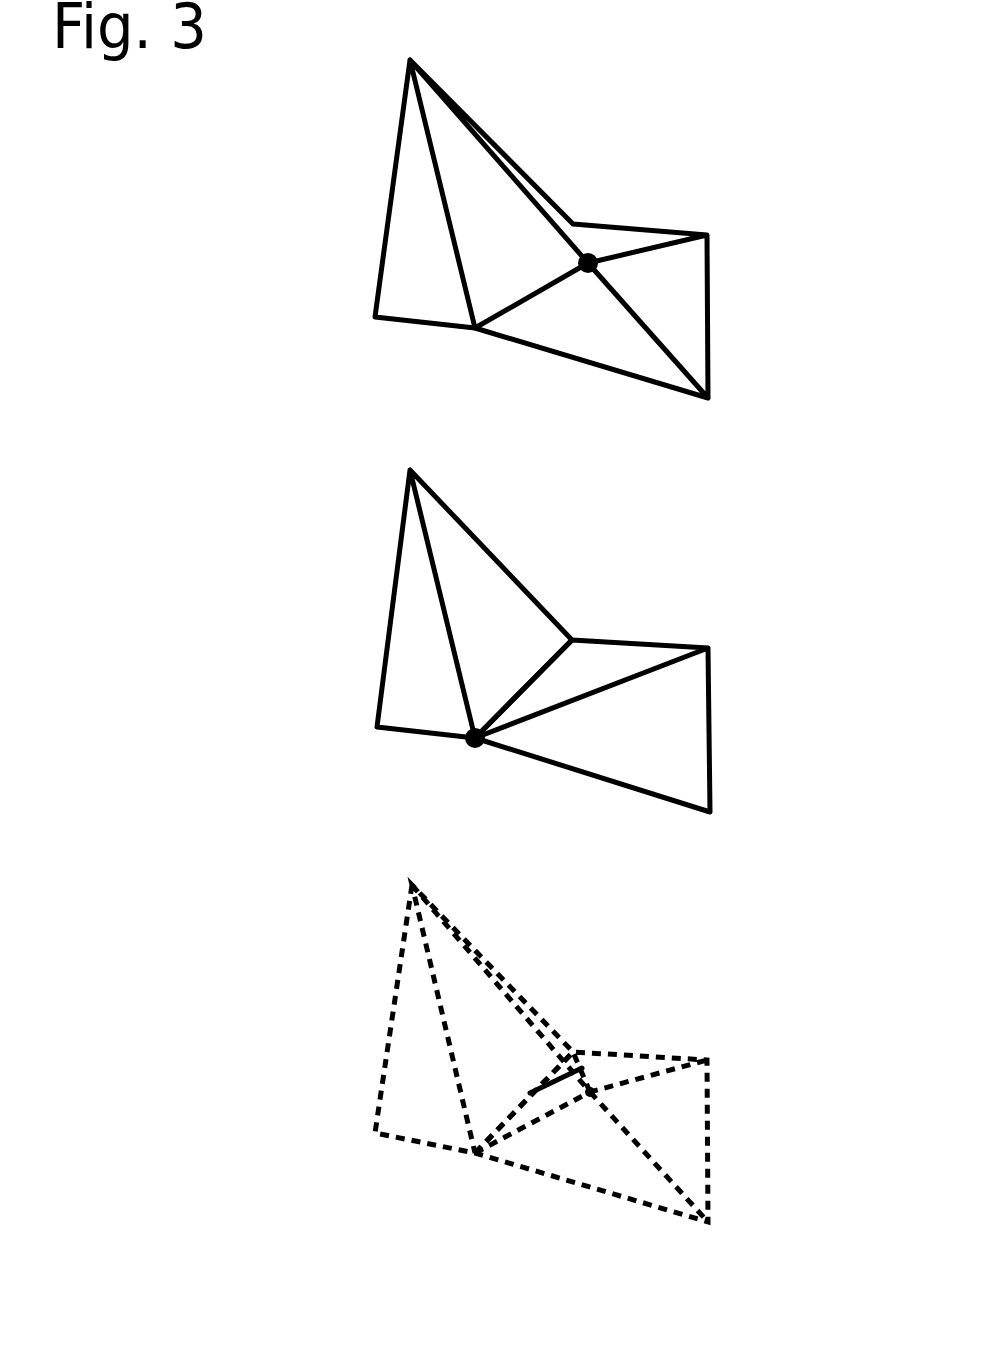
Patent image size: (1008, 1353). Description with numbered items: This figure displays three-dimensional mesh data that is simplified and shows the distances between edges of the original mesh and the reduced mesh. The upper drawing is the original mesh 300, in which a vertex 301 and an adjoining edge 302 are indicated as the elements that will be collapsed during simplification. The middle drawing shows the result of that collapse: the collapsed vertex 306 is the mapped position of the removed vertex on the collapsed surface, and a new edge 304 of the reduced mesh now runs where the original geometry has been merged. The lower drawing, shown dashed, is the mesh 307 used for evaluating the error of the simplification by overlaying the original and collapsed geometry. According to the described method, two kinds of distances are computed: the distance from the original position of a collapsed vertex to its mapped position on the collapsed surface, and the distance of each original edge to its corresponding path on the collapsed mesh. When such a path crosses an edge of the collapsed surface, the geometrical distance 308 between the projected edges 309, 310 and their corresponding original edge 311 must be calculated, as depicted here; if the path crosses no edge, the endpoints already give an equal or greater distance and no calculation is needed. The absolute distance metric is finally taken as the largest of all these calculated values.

The original mesh 300 is at (578, 254).
The vertex to be collapsed 301 is at (588, 252).
The edge to be collapsed 302 is at (527, 303).
The edge after collapse 304 is at (525, 678).
The simplified mesh with collapsed vertex 306 is at (553, 652).
The restored mesh (dashed) 307 is at (601, 1075).
The geometrical distance 308 is at (548, 1075).
The projected edge 309 is at (598, 1105).
The projected edge 310 is at (500, 1122).
The original edge 311 is at (643, 1157).